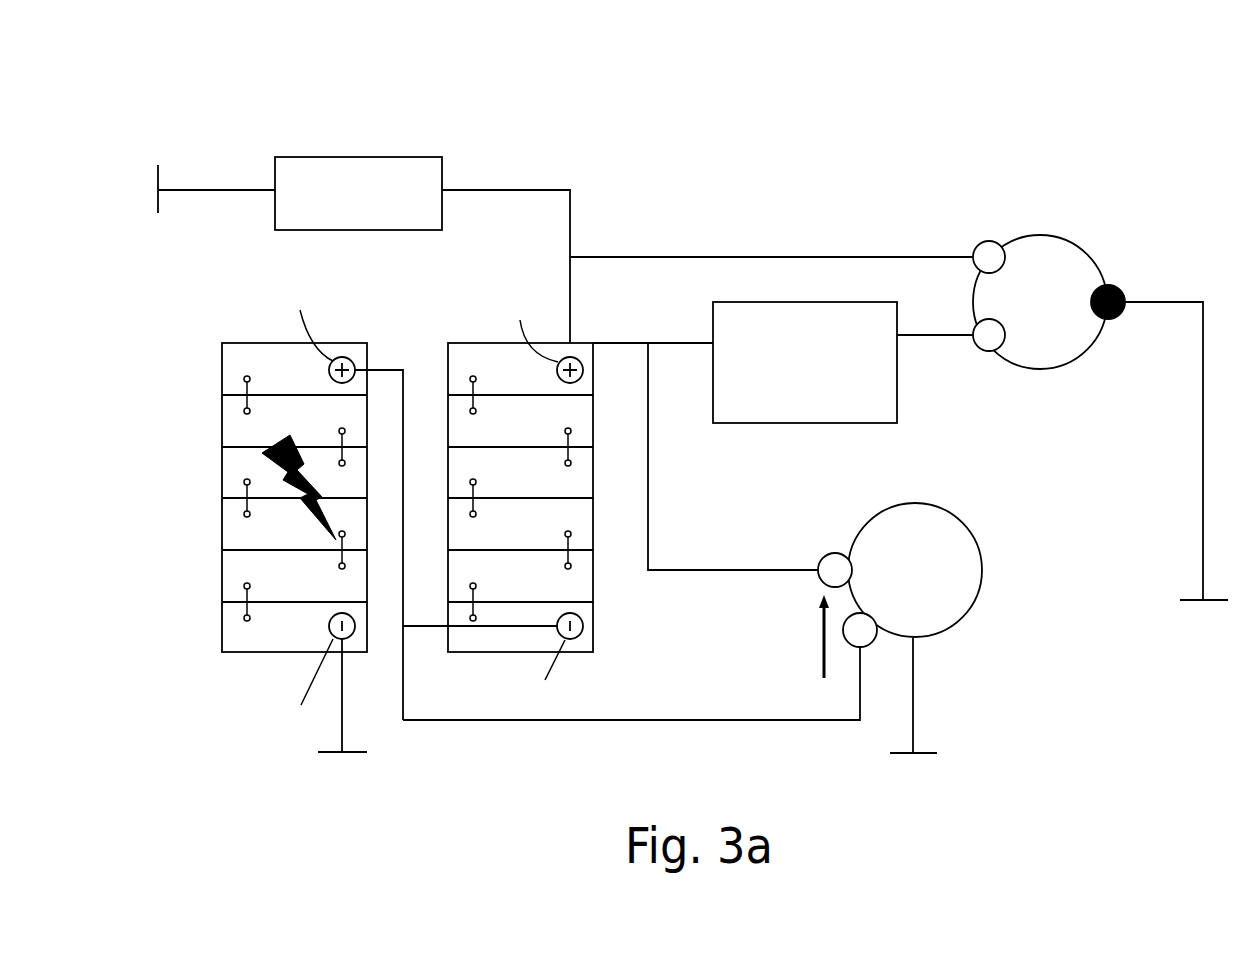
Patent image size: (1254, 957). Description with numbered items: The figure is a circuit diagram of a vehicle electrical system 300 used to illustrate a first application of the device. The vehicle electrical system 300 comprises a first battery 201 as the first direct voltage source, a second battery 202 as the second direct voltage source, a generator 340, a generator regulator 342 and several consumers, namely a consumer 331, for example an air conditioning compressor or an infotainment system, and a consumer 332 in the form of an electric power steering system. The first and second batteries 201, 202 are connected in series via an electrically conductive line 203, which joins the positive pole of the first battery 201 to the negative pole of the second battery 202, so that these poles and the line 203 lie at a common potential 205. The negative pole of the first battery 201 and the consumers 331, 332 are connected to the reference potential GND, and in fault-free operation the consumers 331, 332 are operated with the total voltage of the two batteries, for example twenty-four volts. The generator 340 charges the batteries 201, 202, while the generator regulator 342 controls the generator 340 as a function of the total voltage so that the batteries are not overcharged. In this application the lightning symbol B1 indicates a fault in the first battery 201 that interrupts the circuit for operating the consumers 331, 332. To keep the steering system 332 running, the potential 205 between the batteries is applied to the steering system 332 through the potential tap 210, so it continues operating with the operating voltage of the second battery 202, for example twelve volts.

The vehicle electrical system 300 is at (828, 153).
The consumer 331 is at (395, 170).
The first battery 201 is at (255, 366).
The second battery 202 is at (580, 640).
The line 203 is at (387, 368).
The common potential 205 is at (397, 550).
The potential tap 210 is at (680, 722).
The lightning symbol B1 is at (262, 455).
The generator 340 is at (1052, 262).
The generator regulator 342 is at (857, 390).
The consumer (electric power steering system) 332 is at (960, 557).